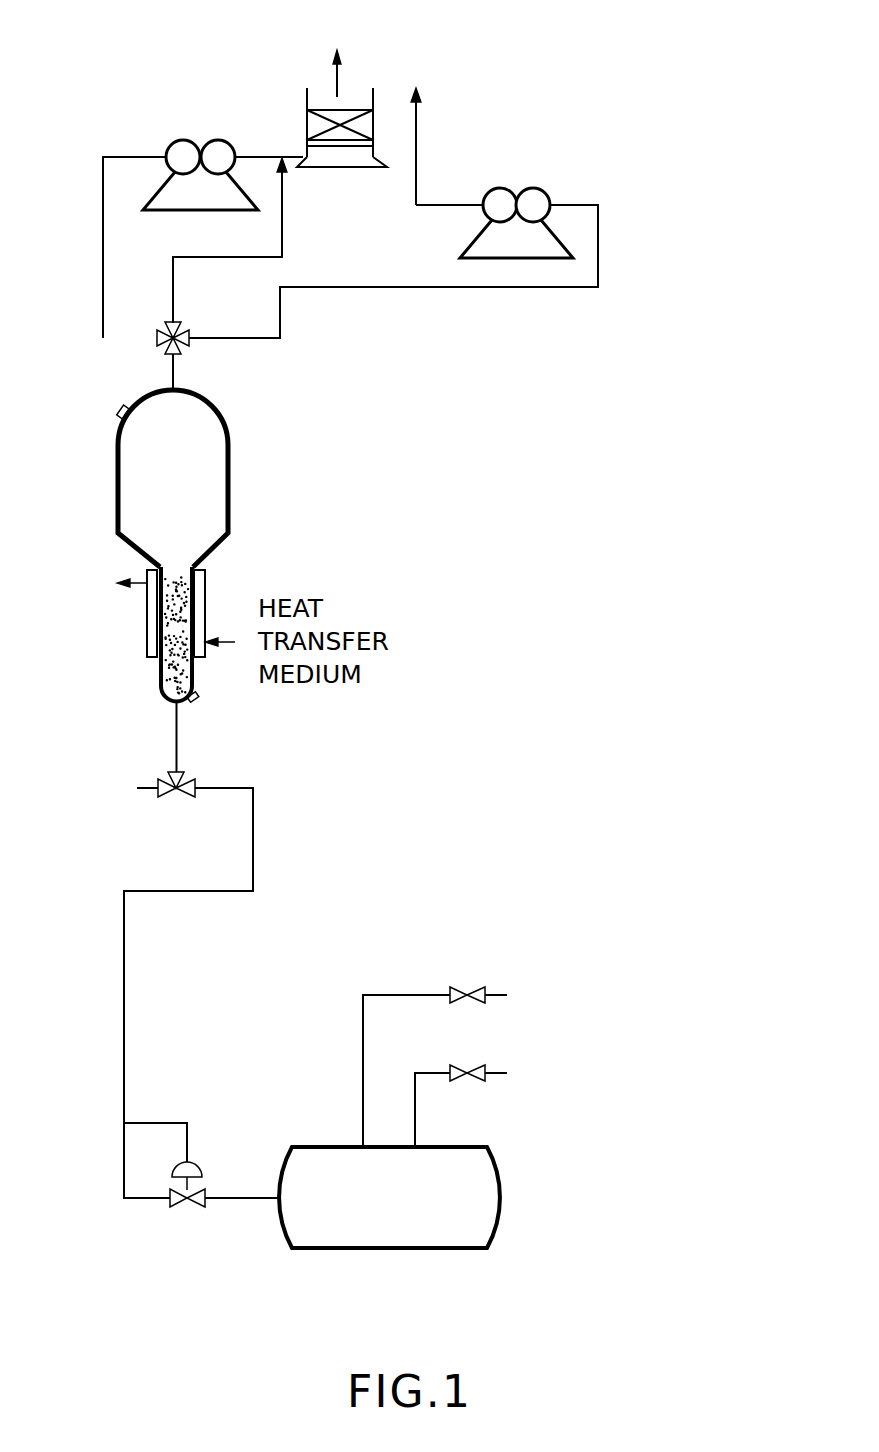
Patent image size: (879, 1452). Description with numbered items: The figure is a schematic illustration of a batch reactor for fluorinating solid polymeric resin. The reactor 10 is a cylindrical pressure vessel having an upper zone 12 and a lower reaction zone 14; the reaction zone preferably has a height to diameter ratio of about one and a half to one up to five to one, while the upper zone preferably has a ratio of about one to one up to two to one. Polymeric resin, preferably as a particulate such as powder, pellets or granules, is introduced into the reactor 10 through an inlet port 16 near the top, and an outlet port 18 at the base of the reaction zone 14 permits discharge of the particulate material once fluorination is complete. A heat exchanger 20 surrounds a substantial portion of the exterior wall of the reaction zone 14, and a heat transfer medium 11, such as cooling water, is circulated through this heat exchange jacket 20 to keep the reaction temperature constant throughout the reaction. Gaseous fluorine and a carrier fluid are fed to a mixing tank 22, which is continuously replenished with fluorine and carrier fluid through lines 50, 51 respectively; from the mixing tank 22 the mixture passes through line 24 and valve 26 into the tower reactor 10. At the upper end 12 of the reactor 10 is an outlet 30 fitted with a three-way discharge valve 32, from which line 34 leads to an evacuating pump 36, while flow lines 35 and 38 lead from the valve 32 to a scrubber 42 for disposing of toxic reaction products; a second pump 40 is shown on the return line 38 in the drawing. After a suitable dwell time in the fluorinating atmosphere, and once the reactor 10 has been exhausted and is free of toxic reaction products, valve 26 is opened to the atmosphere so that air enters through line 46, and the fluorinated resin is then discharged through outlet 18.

The reactor 10 is at (228, 483).
The heat transfer medium 11 is at (223, 626).
The upper zone 12 is at (190, 453).
The reaction zone 14 is at (182, 612).
The inlet port 16 is at (119, 418).
The outlet port 18 is at (195, 704).
The heat exchanger 20 is at (205, 568).
The mixing tank 22 is at (500, 1183).
The line 24 is at (173, 891).
The valve 26 is at (197, 782).
The outlet 30 is at (173, 372).
The three-way discharge valve 32 is at (189, 345).
The line 34 is at (378, 289).
The flow line 35 is at (282, 236).
The evacuating pump 36 is at (533, 195).
The flow line 38 is at (103, 227).
The vacuum pump 40 is at (183, 140).
The scrubber 42 is at (303, 110).
The line 46 is at (147, 783).
The line 50 is at (414, 995).
The line 51 is at (435, 1073).